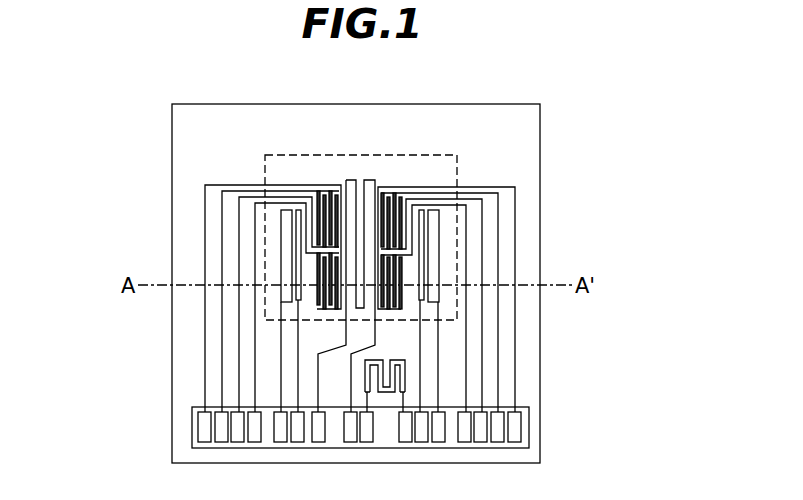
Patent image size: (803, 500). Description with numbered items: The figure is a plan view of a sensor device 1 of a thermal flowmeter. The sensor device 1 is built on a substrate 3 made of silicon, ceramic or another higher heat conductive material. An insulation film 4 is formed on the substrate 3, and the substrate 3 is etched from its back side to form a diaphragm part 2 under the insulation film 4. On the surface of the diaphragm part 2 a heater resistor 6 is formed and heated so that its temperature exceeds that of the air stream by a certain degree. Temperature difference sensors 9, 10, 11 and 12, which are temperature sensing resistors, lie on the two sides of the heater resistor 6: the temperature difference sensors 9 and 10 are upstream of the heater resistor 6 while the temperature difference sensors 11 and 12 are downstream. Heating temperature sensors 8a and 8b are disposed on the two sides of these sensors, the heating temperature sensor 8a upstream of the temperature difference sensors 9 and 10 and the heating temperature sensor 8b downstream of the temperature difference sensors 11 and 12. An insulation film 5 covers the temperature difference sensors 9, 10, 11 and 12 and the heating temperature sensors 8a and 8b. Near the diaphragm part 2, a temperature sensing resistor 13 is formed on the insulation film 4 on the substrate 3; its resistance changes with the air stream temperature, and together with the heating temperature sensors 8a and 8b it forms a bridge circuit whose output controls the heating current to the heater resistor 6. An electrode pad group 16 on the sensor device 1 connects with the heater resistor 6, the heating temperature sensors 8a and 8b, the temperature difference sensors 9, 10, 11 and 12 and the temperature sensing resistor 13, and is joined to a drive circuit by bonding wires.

The sensor device 1 is at (190, 101).
The diaphragm part 2 is at (299, 155).
The substrate 3 is at (172, 145).
The insulation film 4 is at (185, 181).
The insulation film 5 is at (185, 212).
The heater resistor 6 is at (368, 181).
The heating temperature sensor 8a is at (276, 228).
The heating temperature sensor 8b is at (442, 235).
The temperature difference sensor 9 is at (325, 188).
The temperature difference sensor 10 is at (322, 308).
The temperature difference sensor 11 is at (392, 183).
The temperature difference sensor 12 is at (397, 308).
The temperature sensing resistor 13 is at (406, 378).
The electrode pad group 16 is at (198, 428).